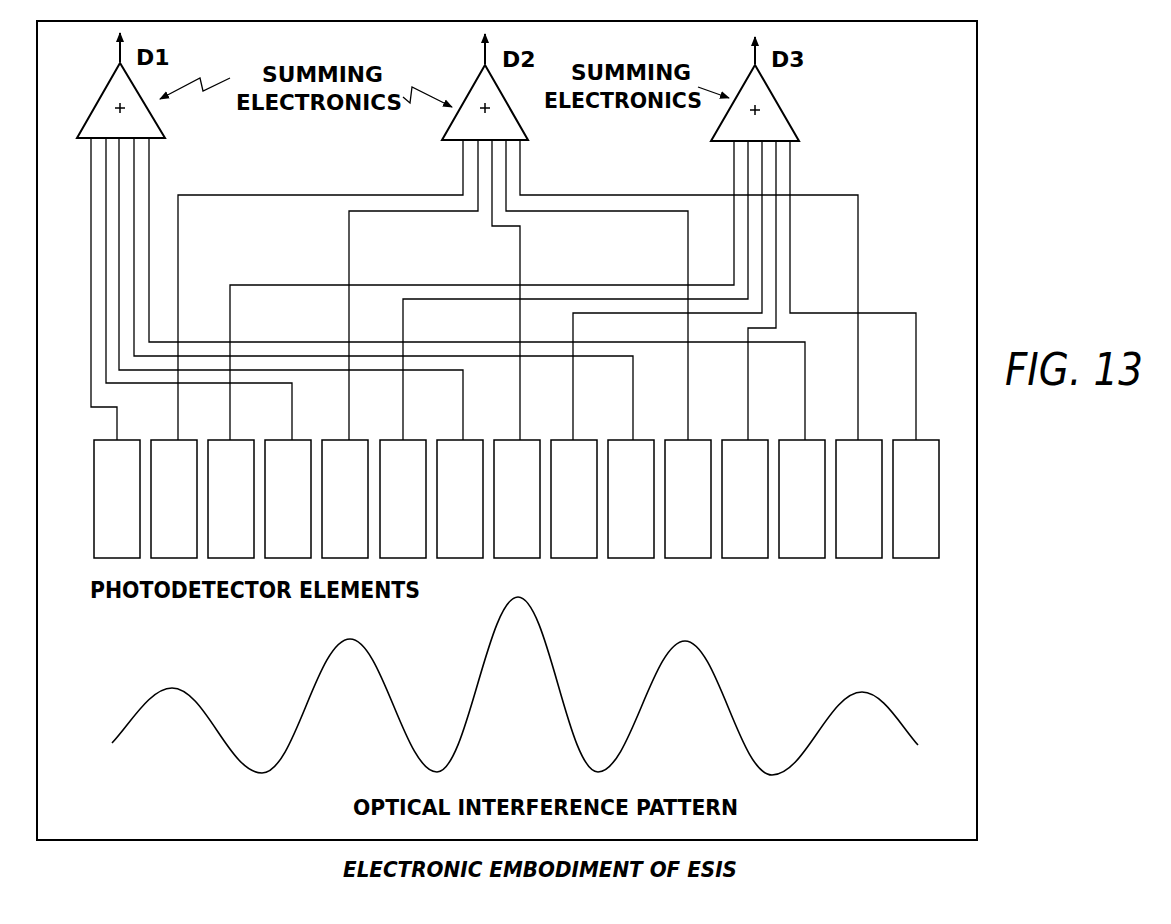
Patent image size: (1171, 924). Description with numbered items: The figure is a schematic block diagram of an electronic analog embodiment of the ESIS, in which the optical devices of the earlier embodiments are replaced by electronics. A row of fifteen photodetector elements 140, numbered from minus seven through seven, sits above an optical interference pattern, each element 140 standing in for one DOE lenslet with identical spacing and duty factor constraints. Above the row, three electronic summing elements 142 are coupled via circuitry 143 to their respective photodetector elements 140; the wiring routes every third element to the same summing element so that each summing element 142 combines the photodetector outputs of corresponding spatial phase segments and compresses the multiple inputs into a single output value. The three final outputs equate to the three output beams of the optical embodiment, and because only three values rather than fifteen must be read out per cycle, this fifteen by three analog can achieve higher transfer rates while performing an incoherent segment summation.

The photodetector element 140 is at (467, 543).
The electronic summing element 142 is at (157, 117).
The circuitry 143 is at (90, 253).